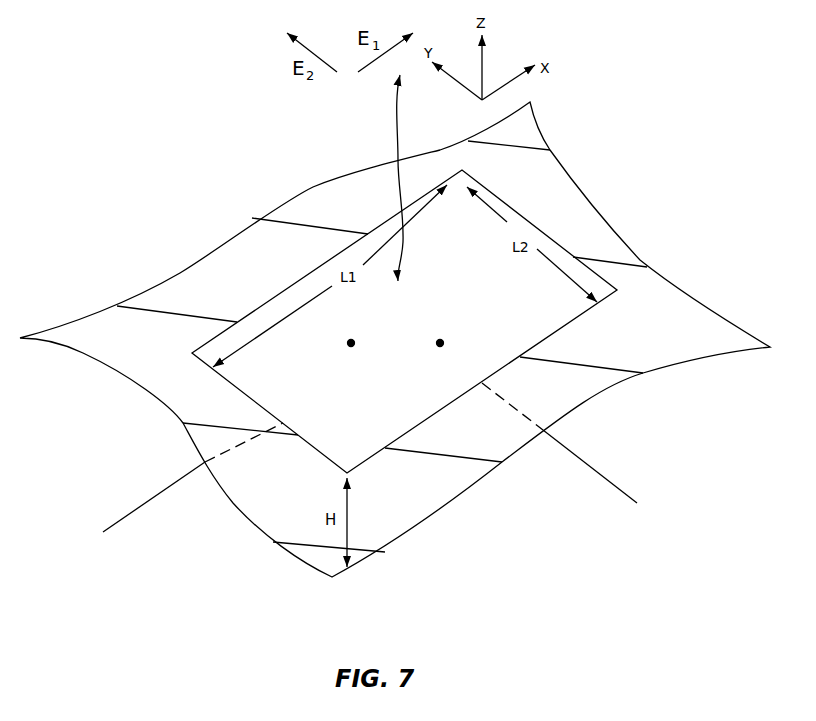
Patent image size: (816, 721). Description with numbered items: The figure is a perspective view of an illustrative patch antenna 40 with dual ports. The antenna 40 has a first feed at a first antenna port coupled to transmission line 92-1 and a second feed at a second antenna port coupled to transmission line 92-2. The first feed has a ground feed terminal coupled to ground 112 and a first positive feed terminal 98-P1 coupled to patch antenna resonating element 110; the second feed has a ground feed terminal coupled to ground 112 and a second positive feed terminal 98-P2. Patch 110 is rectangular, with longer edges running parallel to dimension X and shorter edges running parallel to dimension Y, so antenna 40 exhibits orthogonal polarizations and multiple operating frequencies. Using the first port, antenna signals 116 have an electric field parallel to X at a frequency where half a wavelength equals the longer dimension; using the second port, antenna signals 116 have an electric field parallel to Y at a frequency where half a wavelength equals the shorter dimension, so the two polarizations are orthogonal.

The patch antenna 40 is at (650, 187).
The patch antenna resonating element 110 is at (568, 308).
The ground 112 is at (700, 327).
The antenna signals 116 is at (396, 122).
The transmission line 92-1 is at (137, 512).
The transmission line 92-2 is at (595, 473).
The first positive feed terminal 98-P1 is at (351, 343).
The second positive feed terminal 98-P2 is at (440, 343).